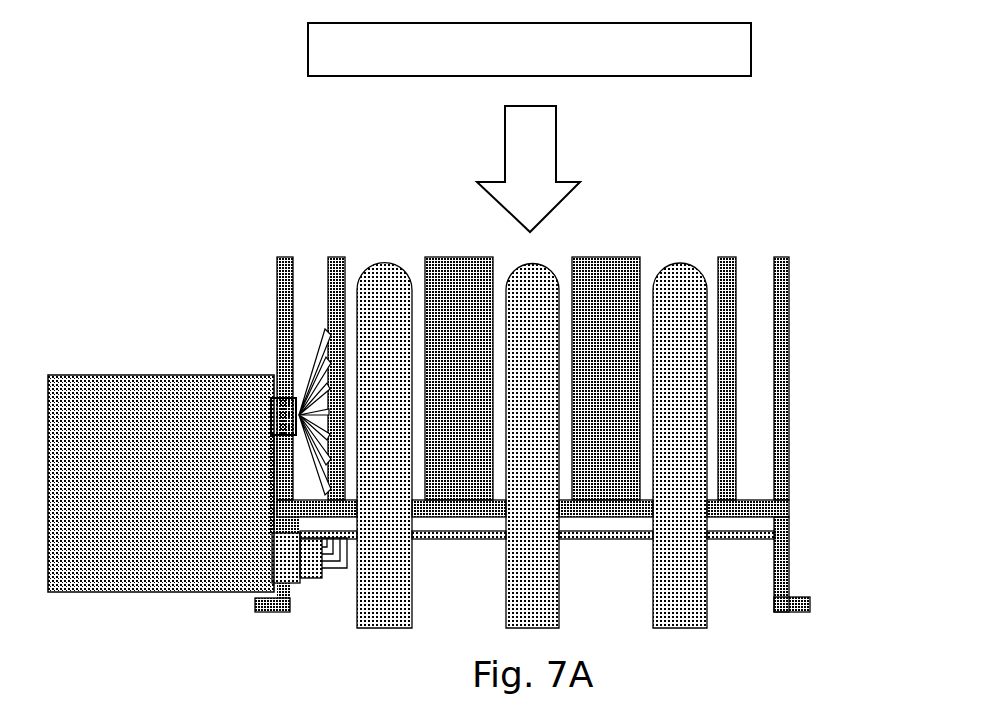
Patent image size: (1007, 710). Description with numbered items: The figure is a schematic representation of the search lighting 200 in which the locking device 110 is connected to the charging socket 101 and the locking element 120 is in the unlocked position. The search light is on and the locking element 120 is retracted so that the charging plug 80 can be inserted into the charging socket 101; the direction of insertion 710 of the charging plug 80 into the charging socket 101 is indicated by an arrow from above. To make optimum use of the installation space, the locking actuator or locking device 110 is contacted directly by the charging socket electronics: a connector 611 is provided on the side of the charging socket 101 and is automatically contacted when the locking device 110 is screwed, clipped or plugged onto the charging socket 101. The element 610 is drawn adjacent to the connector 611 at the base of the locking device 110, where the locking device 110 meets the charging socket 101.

The charging plug 80 is at (776, 43).
The direction of insertion 710 is at (571, 138).
The charging socket 101 is at (382, 207).
The search lighting 200 is at (181, 399).
The locking device 110 is at (118, 365).
The locking element 120 is at (271, 396).
The connector block 610 is at (263, 569).
The connector 611 is at (320, 587).